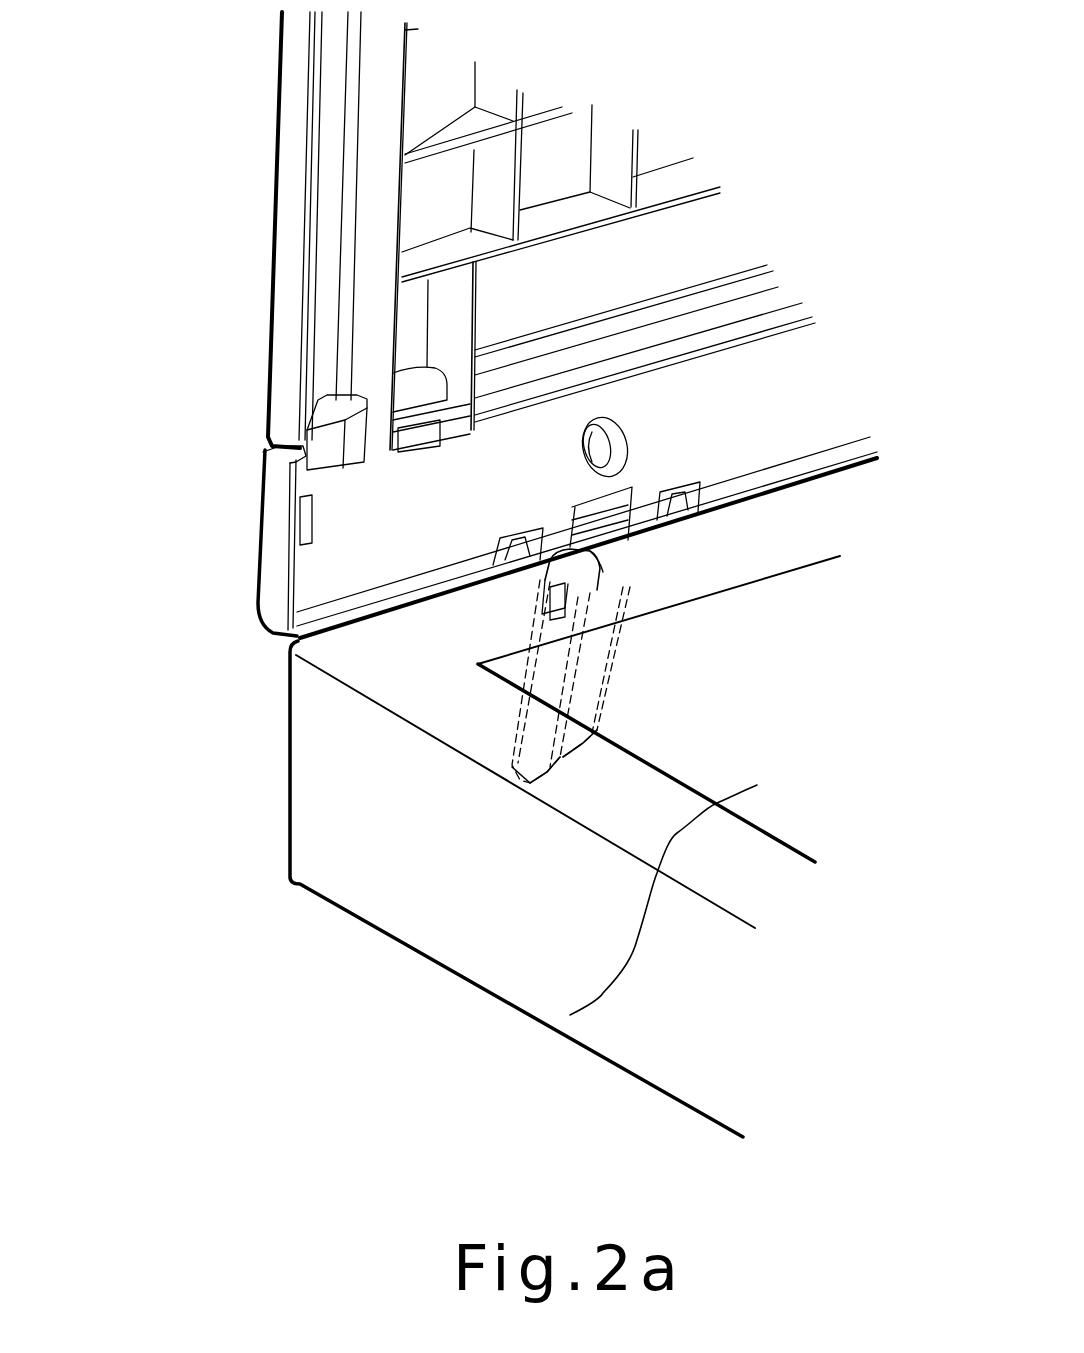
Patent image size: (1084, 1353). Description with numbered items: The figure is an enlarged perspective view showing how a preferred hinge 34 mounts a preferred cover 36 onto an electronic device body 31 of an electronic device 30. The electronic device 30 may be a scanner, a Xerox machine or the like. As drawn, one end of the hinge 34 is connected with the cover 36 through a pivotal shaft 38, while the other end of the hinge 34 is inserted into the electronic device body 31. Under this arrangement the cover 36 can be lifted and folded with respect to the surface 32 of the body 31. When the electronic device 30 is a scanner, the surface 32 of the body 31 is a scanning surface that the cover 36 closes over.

The electronic device 30 is at (182, 422).
The electronic device body 31 is at (388, 898).
The surface 32 is at (570, 1015).
The hinge 34 is at (548, 669).
The cover 36 is at (295, 88).
The pivotal shaft 38 is at (550, 513).